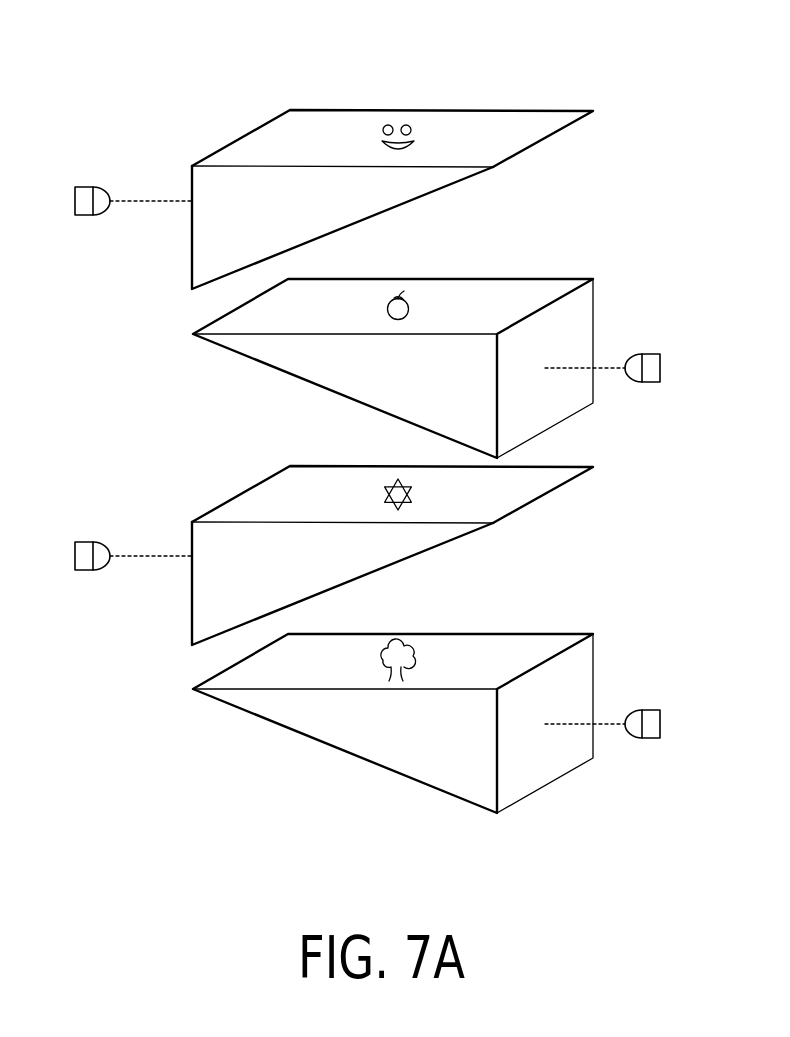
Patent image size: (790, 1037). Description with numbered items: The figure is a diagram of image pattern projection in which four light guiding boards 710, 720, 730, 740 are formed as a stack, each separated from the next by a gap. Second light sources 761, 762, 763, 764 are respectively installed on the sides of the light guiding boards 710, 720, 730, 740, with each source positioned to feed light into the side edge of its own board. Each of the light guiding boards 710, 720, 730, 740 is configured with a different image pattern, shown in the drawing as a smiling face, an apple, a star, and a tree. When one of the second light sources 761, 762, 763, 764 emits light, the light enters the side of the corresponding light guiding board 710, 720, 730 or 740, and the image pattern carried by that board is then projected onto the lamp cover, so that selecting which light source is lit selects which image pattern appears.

The light guiding board 710 is at (318, 130).
The light guiding board 720 is at (532, 292).
The light guiding board 730 is at (237, 513).
The light guiding board 740 is at (545, 648).
The second light source 761 is at (84, 202).
The second light source 762 is at (651, 366).
The second light source 763 is at (84, 557).
The second light source 764 is at (650, 720).